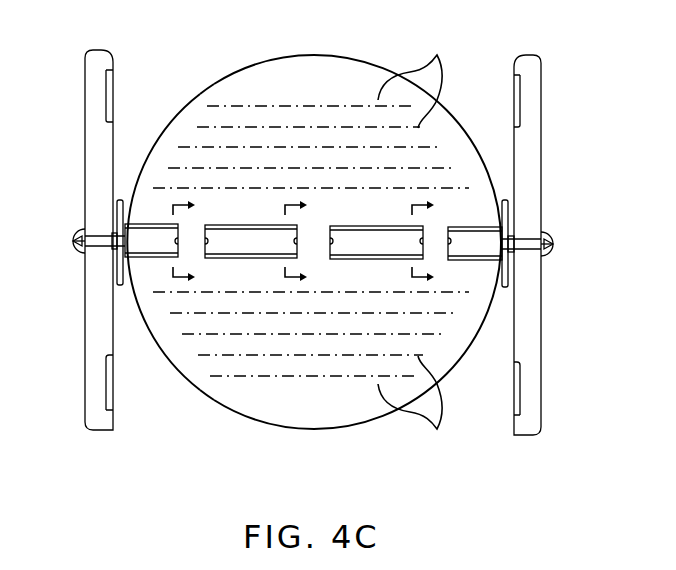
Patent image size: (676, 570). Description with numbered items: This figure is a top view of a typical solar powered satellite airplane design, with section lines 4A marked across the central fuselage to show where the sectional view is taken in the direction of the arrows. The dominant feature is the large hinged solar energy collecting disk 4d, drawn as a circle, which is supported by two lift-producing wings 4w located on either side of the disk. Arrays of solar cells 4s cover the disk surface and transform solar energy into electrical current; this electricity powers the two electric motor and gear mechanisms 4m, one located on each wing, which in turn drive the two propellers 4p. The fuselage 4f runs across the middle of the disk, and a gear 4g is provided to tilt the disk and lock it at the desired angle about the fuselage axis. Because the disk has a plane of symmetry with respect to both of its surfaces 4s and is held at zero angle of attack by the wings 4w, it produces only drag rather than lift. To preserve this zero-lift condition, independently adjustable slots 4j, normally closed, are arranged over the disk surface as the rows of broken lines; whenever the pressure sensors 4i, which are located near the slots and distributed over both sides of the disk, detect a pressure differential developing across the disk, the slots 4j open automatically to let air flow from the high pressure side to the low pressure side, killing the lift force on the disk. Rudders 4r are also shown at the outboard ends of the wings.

The wings 4w is at (98, 130).
The electric motor and gear mechanism 4m is at (98, 234).
The propellers 4p is at (122, 200).
The gear to tilt and lock disk 4g is at (177, 241).
The solar energy collecting disk 4d is at (178, 108).
The solar cell array 4s is at (240, 83).
The slots 4j is at (278, 126).
The pressure sensors 4i is at (412, 244).
The fuselage 4f is at (574, 256).
The rudders 4r is at (80, 256).
The section line 4A- 4A is at (317, 241).